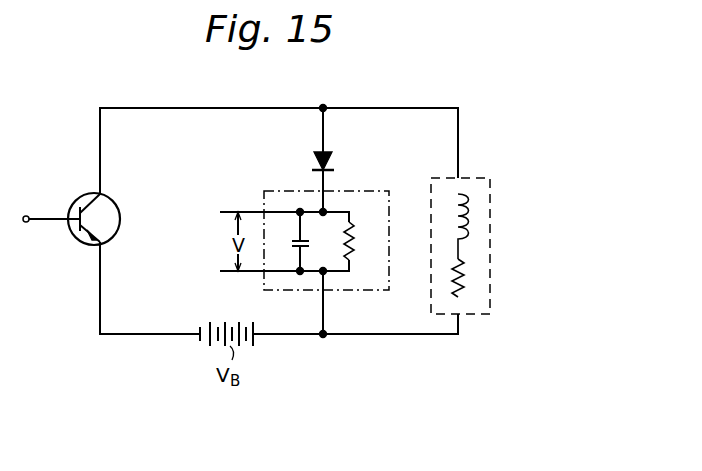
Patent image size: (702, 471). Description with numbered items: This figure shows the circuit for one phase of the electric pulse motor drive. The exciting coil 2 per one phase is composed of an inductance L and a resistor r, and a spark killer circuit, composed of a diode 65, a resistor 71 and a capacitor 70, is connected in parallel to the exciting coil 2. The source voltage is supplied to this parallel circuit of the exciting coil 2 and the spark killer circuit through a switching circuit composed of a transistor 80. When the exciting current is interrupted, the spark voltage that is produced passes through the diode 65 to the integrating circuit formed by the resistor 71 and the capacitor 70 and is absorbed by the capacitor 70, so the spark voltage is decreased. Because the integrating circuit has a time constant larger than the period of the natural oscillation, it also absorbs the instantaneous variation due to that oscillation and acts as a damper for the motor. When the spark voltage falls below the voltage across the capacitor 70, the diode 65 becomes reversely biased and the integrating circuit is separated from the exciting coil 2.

The transistor 80 is at (113, 228).
The diode 65 is at (331, 161).
The capacitor 70 is at (290, 240).
The resistor 71 is at (353, 238).
The exciting coil 2 is at (490, 240).